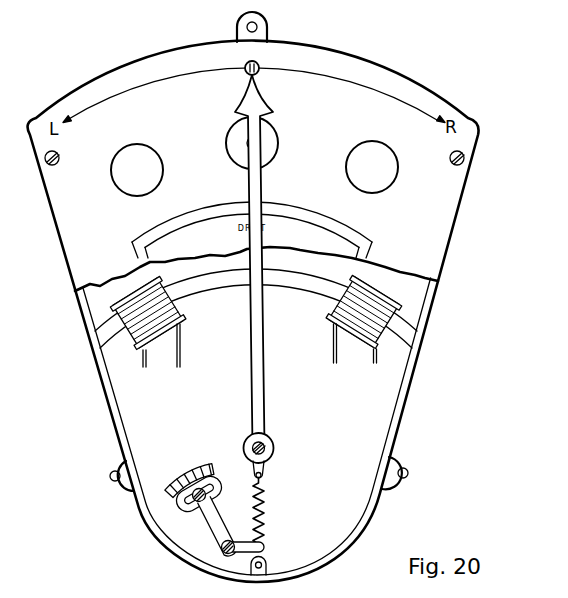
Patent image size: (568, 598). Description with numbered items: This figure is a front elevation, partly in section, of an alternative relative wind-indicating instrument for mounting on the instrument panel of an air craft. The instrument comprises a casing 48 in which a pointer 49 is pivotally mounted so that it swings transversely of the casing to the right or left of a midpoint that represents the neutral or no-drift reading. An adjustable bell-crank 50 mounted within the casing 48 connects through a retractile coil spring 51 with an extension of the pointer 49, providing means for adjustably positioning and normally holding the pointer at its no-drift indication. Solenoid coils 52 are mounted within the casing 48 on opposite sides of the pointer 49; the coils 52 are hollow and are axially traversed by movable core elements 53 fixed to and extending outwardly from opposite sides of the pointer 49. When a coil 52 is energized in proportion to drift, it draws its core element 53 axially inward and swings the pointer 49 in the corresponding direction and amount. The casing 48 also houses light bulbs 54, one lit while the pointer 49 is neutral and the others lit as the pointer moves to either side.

The casing 48 is at (415, 380).
The pointer 49 is at (264, 393).
The adjustable bell-crank 50 is at (215, 520).
The retractile coil spring 51 is at (265, 515).
The solenoid coils 52 is at (160, 328).
The core elements 53 is at (201, 287).
The light bulbs 54 is at (403, 163).